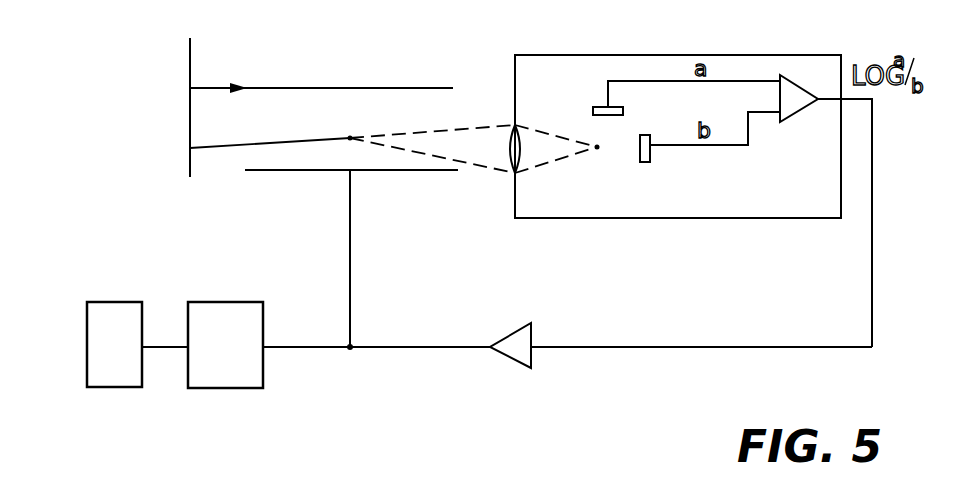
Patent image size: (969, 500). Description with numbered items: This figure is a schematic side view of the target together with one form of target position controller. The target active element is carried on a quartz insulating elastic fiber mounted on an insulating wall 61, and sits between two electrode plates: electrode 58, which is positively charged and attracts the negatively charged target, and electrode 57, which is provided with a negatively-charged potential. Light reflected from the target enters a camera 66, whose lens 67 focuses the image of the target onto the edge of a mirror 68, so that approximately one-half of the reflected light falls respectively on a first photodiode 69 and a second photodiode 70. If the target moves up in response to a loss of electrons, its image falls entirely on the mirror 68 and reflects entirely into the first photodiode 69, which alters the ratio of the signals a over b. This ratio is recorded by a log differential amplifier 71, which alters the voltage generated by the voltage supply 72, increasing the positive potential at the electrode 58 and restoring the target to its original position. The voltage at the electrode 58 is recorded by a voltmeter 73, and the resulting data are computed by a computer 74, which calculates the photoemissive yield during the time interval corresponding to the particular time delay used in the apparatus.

The electrode 57 is at (325, 171).
The electrode 58 is at (360, 88).
The insulating wall 61 is at (190, 117).
The camera 66 is at (590, 55).
The lens 67 is at (532, 149).
The mirror 68 is at (592, 153).
The first photodiode 69 is at (623, 111).
The second photodiode 70 is at (645, 162).
The log differential amplifier 71 is at (803, 91).
The voltage supply 72 is at (512, 335).
The voltmeter 73 is at (253, 356).
The computer 74 is at (132, 356).